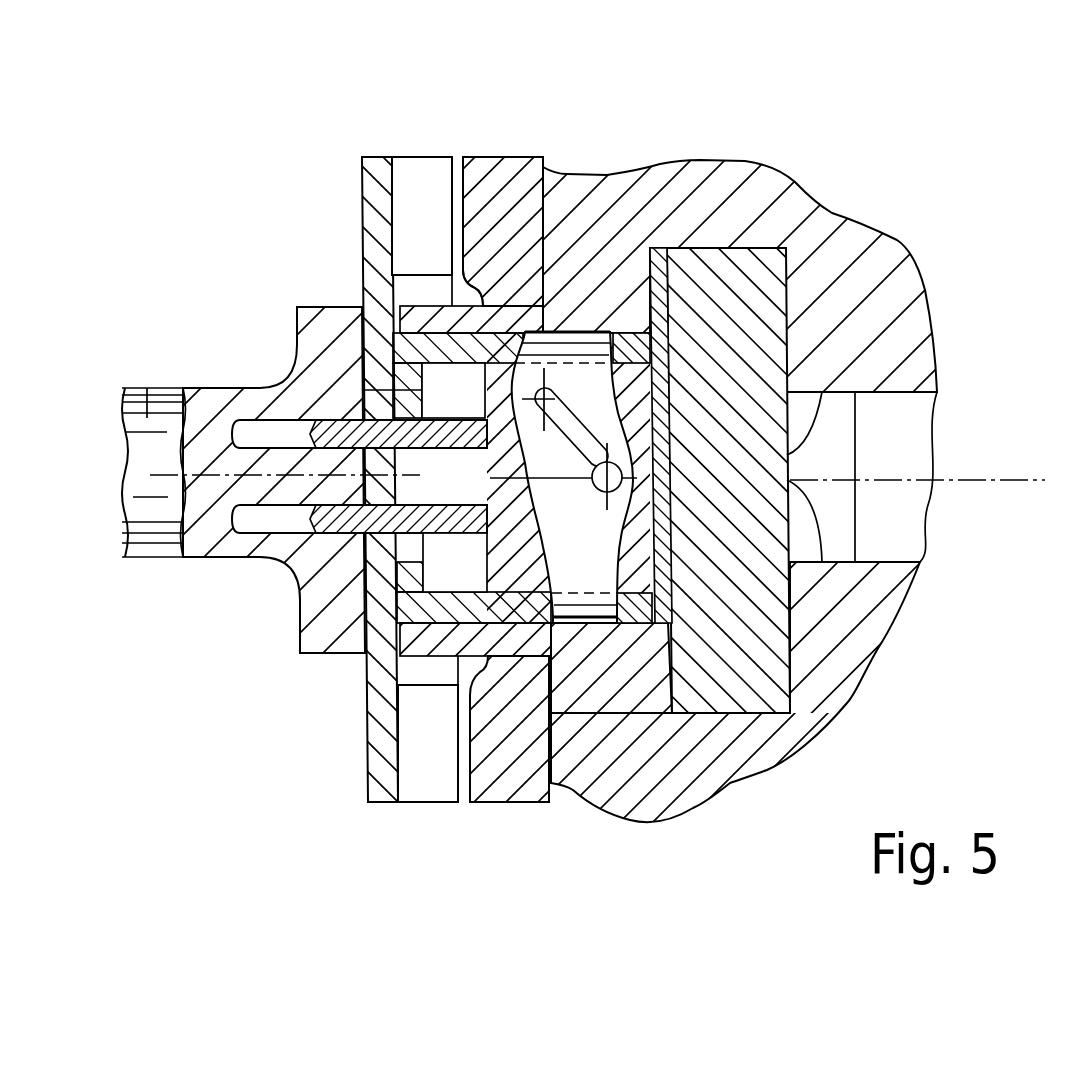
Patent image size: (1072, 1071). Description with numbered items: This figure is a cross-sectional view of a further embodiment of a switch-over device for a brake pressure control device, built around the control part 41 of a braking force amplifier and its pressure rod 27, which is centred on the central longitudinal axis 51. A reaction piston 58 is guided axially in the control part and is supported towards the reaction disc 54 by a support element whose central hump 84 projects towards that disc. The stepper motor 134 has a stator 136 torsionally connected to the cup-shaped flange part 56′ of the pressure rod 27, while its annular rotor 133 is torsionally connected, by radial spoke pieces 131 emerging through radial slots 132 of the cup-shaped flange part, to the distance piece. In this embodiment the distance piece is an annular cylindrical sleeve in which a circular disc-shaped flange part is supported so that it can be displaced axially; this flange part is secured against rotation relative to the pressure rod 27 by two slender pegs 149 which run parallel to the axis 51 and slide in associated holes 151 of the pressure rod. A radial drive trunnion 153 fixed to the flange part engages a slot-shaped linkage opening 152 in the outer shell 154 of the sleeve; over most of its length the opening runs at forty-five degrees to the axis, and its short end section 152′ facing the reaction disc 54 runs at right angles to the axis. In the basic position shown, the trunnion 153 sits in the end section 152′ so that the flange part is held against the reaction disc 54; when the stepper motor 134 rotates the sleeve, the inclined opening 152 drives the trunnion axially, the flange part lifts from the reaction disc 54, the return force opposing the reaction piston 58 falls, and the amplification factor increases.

The pressure rod 27 is at (146, 420).
The control part 41 is at (905, 605).
The central longitudinal axis 51 is at (1003, 484).
The reaction disc 54 is at (718, 293).
The cup-shaped flange part 56′ is at (570, 295).
The reaction piston 58 is at (890, 420).
The central hump 84 is at (797, 463).
The spoke pieces 131 is at (370, 197).
The radial slots 132 is at (394, 305).
The rotor 133 is at (413, 178).
The stepper motor 134 is at (451, 142).
The stator 136 is at (500, 186).
The pegs 149 is at (440, 437).
The holes 151 is at (262, 432).
The linkage opening 152 is at (557, 437).
The short end section 152′ is at (612, 523).
The drive trunnion 153 is at (578, 480).
The outer shell 154 is at (443, 637).